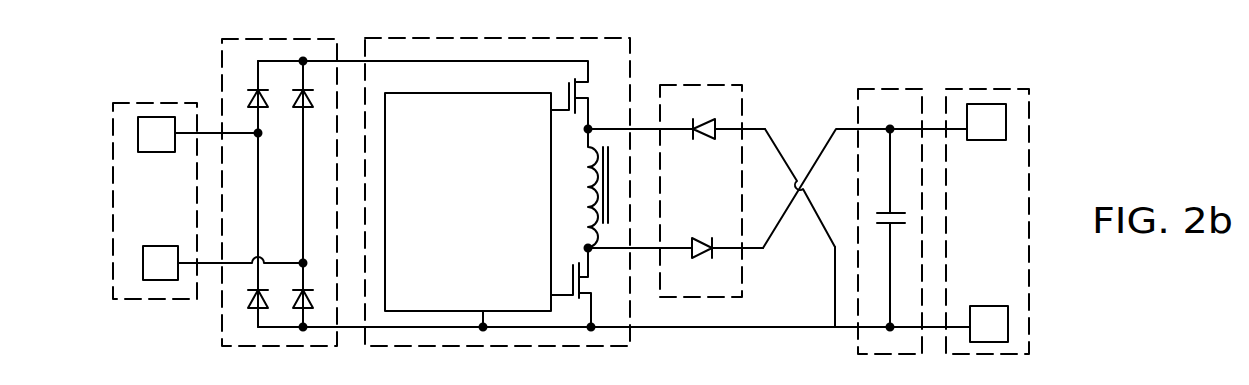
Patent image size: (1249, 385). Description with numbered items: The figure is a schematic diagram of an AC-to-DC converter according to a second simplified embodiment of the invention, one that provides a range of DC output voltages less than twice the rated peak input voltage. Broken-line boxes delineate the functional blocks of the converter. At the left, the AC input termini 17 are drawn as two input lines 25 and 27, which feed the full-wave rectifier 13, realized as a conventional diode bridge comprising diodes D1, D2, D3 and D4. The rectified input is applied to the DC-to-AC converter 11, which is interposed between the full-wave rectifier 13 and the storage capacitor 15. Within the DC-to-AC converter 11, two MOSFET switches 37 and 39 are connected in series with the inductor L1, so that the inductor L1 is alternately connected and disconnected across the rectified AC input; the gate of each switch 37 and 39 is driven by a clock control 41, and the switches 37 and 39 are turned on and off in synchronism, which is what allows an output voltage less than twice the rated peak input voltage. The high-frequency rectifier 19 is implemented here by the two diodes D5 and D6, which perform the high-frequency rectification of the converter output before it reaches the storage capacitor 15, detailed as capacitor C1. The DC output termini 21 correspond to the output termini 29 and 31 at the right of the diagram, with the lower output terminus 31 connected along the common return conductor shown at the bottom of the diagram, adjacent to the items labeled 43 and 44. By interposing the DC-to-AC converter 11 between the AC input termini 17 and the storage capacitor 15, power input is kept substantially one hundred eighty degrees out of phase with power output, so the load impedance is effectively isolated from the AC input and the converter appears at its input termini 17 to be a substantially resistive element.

The DC-to-AC converter 11 is at (520, 37).
The full-wave rectifier 13 is at (298, 38).
The storage capacitor 15 is at (892, 88).
The AC input termini 17 is at (162, 101).
The rectifier 19 is at (710, 85).
The DC output termini 21 is at (987, 88).
The input line 25 is at (165, 153).
The input line 27 is at (166, 246).
The output terminus 29 is at (992, 141).
The output terminus 31 is at (1000, 298).
The MOSFET switch 37 is at (583, 271).
The MOSFET switch 39 is at (567, 88).
The clock control 41 is at (485, 256).
The negative rail conductor 43 is at (614, 356).
The return conductor 44 is at (751, 316).
The diode D1 is at (247, 194).
The diode D2 is at (292, 194).
The diode D3 is at (247, 312).
The diode D4 is at (292, 312).
The diode D5 is at (676, 144).
The diode D6 is at (675, 224).
The inductor L1 is at (585, 189).
The capacitor C1 is at (885, 228).